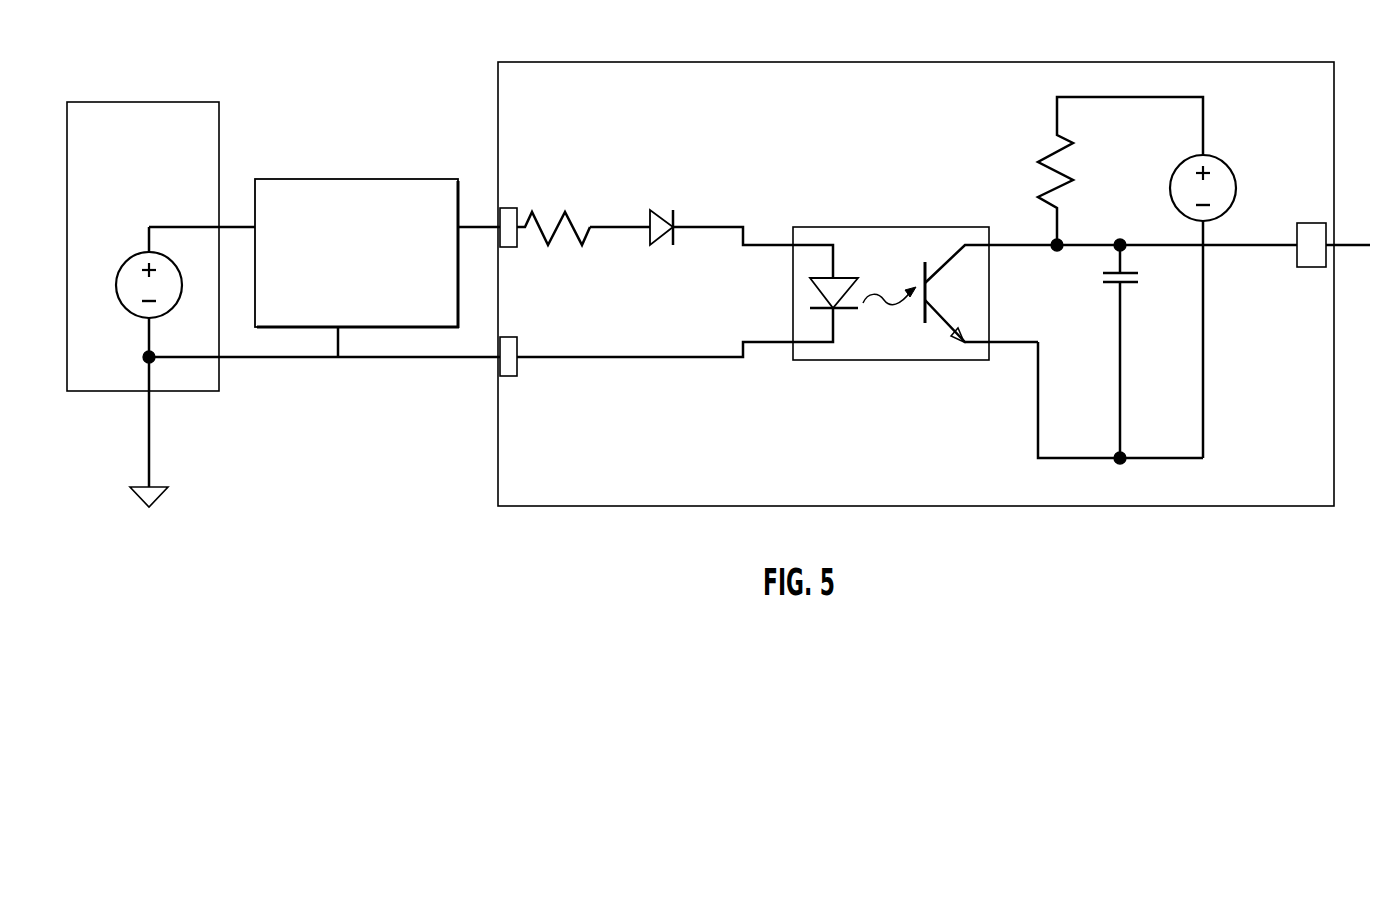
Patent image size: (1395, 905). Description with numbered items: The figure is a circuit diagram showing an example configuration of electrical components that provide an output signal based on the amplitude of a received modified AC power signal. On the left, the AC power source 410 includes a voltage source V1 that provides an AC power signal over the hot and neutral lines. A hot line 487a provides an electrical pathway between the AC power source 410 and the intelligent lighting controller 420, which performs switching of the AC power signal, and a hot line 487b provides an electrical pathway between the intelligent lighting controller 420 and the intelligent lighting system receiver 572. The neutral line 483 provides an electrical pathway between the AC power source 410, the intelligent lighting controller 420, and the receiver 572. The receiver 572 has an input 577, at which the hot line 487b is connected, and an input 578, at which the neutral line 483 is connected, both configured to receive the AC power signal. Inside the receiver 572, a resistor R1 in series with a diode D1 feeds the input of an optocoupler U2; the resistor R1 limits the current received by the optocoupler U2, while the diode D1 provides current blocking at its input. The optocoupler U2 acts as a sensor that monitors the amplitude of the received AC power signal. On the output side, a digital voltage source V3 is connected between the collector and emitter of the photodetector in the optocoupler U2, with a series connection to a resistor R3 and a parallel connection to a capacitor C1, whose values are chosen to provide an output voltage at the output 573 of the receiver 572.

The AC power source 410 is at (205, 173).
The intelligent lighting controller 420 is at (427, 282).
The hot line 487a is at (238, 226).
The hot line 487b is at (478, 226).
The neutral line 483 is at (403, 358).
The intelligent lighting system receiver 572 is at (957, 482).
The input 577 is at (508, 208).
The input 578 is at (508, 377).
The output 573 is at (1293, 255).
The voltage source V1 is at (158, 275).
The resistor R1 is at (553, 212).
The diode D1 is at (691, 212).
The optocoupler U2 is at (915, 274).
The resistor R3 is at (1120, 171).
The digital voltage source V3 is at (1215, 291).
The capacitor C1 is at (1133, 351).